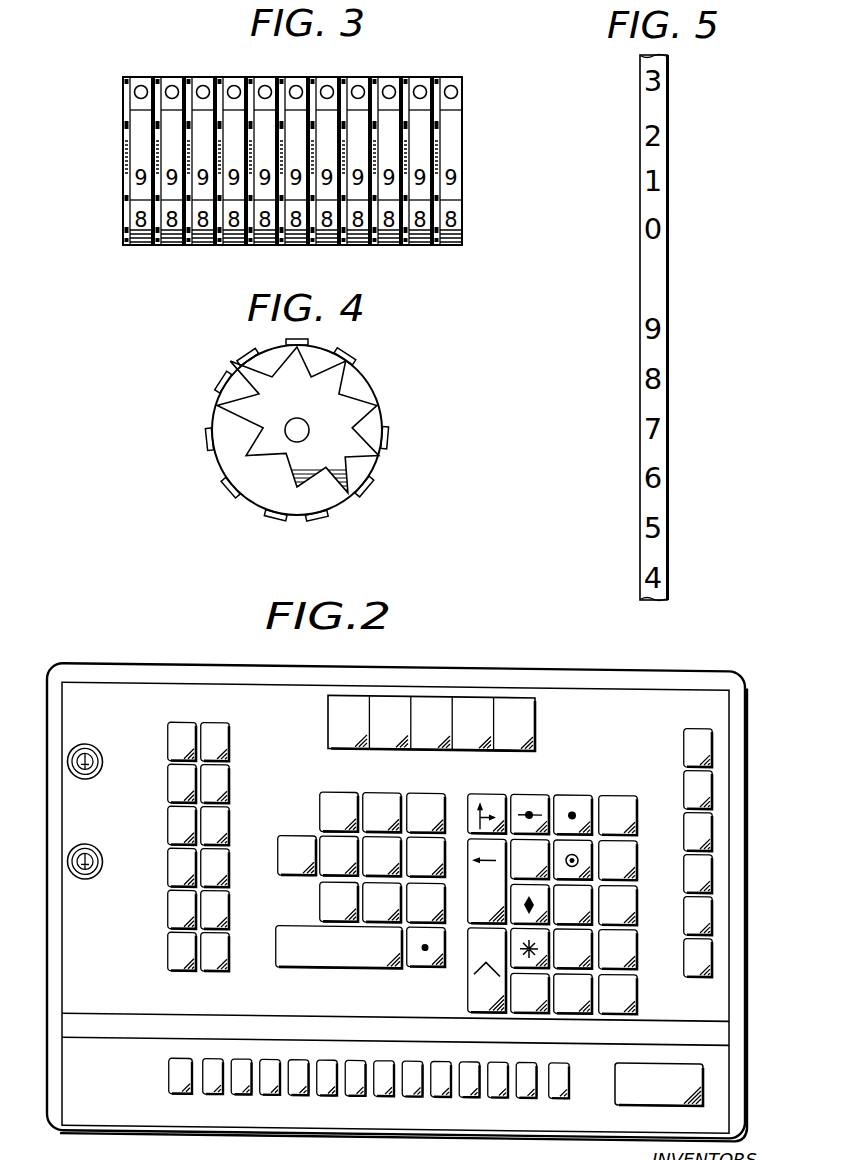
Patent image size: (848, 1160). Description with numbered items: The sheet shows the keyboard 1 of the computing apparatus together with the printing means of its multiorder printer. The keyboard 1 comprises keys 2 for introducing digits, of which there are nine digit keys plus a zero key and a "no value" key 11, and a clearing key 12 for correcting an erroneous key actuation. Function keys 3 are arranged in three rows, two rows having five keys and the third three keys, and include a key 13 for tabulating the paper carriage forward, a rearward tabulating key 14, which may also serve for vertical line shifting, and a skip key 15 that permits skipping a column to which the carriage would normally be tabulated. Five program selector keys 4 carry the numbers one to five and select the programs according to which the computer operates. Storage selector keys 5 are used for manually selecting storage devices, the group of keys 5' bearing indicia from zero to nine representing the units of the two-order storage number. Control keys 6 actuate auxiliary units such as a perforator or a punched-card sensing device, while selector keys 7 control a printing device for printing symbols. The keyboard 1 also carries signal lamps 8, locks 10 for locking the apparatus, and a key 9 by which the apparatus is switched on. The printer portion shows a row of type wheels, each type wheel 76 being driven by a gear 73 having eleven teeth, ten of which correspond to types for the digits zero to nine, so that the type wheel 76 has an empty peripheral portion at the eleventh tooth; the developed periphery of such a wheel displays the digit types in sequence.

In FIG. 2, the keyboard 1 is at (613, 691).
In FIG. 2, the keys for introducing digits 2 is at (420, 789).
In FIG. 2, the function keys 3 is at (570, 787).
In FIG. 2, the program selector keys 4 is at (612, 789).
In FIG. 2, the storage selector keys 5 is at (369, 1043).
In FIG. 2, the key group of storage selector keys 5' is at (451, 1111).
In FIG. 2, the control keys 6 is at (684, 734).
In FIG. 2, the selector keys 7 is at (212, 721).
In FIG. 2, the signal lamps 8 is at (511, 699).
In FIG. 2, the key 9 is at (615, 1074).
In FIG. 2, the locks 10 is at (91, 846).
In FIG. 2, the "no value" key 11 is at (413, 963).
In FIG. 2, the clearing key 12 is at (286, 874).
In FIG. 2, the key for tabulating in forward direction 13 is at (487, 881).
In FIG. 2, the rearward tabulating key 14 is at (478, 795).
In FIG. 2, the skip key 15 is at (468, 995).
In FIG. 4, the gear 73 is at (252, 466).
In FIG. 3, the type wheel 76 is at (456, 247).
In FIG. 4, the type wheel 76 is at (222, 418).